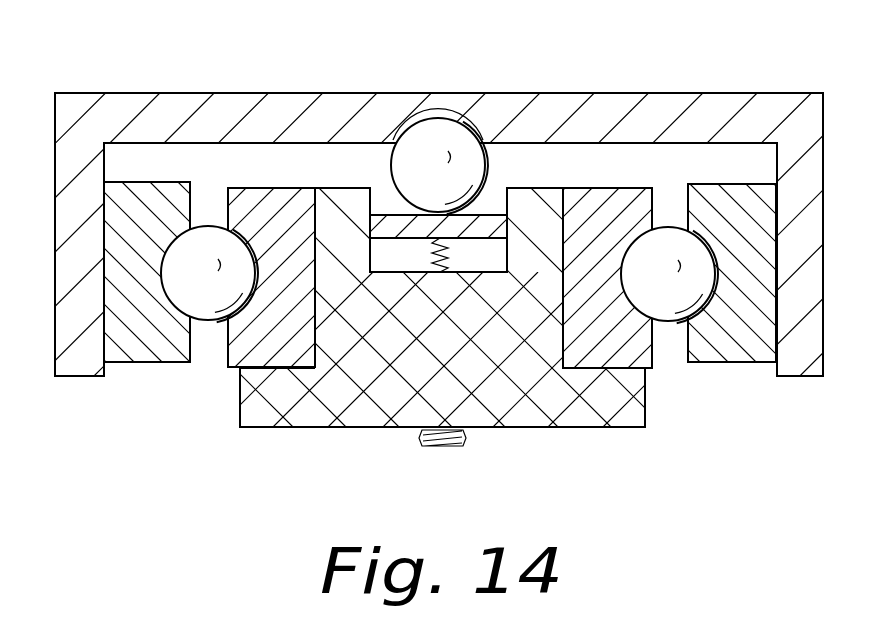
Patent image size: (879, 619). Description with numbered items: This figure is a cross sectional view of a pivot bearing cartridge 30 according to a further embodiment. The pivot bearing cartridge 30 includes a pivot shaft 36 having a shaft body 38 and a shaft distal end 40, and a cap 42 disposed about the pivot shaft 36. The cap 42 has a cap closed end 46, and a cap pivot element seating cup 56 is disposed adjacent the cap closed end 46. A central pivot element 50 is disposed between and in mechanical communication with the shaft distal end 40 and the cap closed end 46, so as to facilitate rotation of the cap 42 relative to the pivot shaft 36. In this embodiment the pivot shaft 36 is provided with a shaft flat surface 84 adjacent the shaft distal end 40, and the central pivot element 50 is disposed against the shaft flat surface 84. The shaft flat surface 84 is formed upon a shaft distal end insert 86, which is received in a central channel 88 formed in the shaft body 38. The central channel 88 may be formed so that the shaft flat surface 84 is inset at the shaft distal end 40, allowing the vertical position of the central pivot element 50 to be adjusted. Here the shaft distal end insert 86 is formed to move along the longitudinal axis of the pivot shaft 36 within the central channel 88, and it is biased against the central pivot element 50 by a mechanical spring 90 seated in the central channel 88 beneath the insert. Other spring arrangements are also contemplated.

The pivot bearing cartridge 30 is at (143, 67).
The pivot shaft 36 is at (437, 392).
The shaft body 38 is at (432, 323).
The shaft distal end 40 is at (533, 210).
The cap 42 is at (710, 108).
The cap closed end 46 is at (543, 108).
The central pivot element 50 is at (447, 137).
The cap pivot element seating cup 56 is at (410, 114).
The shaft flat surface 84 is at (486, 216).
The shaft distal end insert 86 is at (397, 224).
The central channel 88 is at (472, 258).
The mechanical spring 90 is at (416, 262).